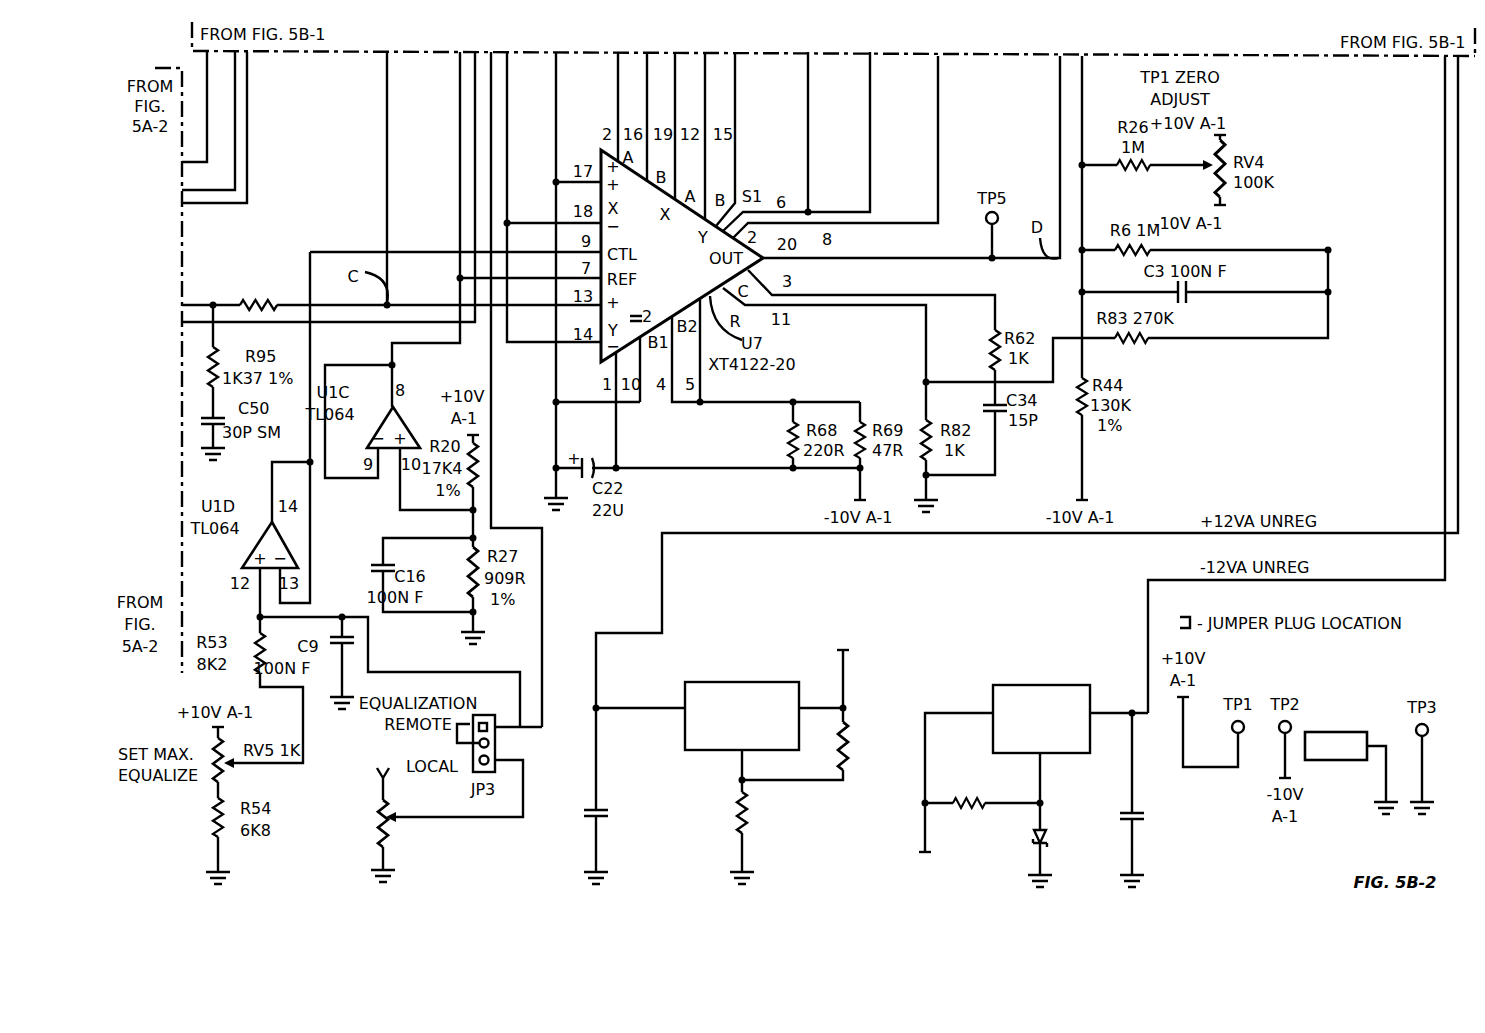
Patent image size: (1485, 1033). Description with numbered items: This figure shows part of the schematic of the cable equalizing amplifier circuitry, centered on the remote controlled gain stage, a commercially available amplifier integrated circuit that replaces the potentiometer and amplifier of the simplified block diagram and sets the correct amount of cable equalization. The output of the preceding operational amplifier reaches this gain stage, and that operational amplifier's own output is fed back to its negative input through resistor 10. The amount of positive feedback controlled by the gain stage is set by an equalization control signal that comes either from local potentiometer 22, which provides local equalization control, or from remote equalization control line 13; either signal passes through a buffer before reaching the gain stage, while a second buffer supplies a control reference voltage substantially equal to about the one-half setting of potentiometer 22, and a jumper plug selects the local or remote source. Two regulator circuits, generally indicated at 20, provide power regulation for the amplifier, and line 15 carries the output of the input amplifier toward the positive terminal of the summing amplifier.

The resistor 10 is at (268, 312).
The remote equalization control line 13 is at (542, 630).
The line 15 is at (1336, 746).
The power regulation circuits 20 is at (912, 633).
The local potentiometer 22 is at (381, 808).